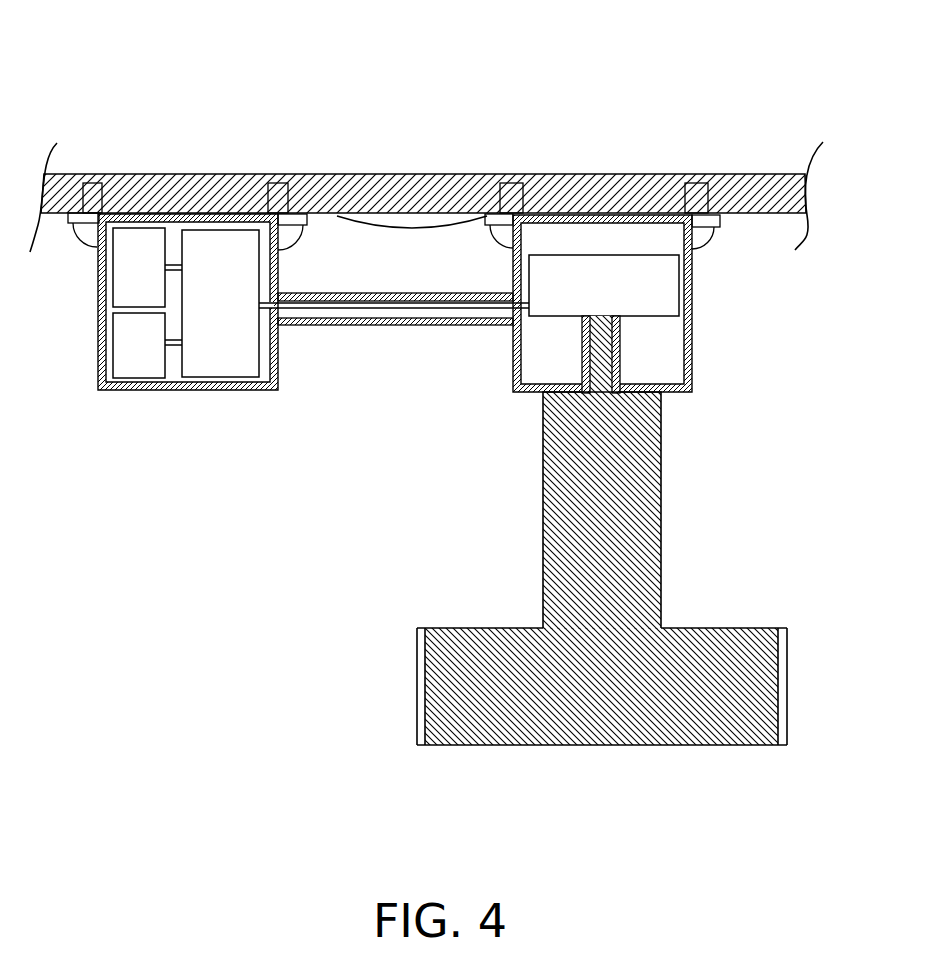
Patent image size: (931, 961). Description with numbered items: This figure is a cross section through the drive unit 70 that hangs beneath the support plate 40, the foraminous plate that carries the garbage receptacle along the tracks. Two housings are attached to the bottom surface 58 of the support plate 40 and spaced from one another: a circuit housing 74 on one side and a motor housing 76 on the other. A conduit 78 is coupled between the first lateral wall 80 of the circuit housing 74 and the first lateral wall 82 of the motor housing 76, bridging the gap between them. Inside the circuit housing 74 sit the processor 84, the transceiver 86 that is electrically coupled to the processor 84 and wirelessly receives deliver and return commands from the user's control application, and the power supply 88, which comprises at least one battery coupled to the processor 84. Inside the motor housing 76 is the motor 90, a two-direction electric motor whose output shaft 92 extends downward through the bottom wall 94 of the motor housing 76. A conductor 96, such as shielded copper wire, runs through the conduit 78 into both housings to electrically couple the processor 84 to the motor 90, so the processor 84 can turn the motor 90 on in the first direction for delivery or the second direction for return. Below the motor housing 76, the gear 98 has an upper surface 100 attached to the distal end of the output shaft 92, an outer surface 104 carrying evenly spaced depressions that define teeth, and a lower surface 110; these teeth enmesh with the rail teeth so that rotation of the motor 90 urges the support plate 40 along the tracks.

The support plate 40 is at (498, 145).
The bottom surface 58 is at (413, 217).
The drive unit 70 is at (158, 349).
The circuit housing 74 is at (100, 390).
The motor housing 76 is at (619, 296).
The conduit 78 is at (355, 322).
The first lateral wall 80 is at (278, 278).
The first lateral wall 82 is at (513, 362).
The processor 84 is at (135, 228).
The transceiver 86 is at (150, 362).
The power supply 88 is at (237, 360).
The motor 90 is at (615, 255).
The output shaft 92 is at (602, 350).
The bottom wall 94 is at (558, 393).
The conductor 96 is at (447, 308).
The gear 98 is at (581, 708).
The upper surface 100 is at (694, 628).
The outer surface 104 is at (425, 681).
The lower surface 110 is at (725, 747).